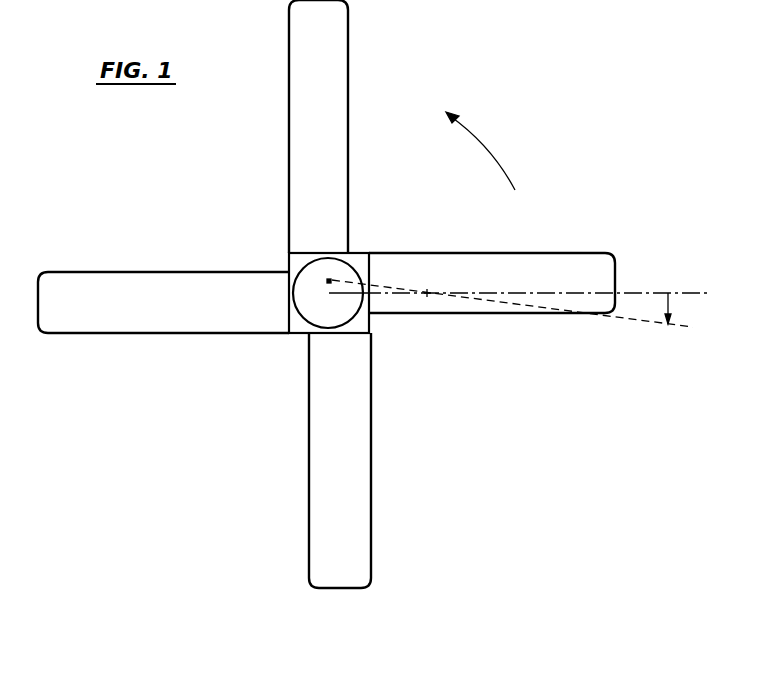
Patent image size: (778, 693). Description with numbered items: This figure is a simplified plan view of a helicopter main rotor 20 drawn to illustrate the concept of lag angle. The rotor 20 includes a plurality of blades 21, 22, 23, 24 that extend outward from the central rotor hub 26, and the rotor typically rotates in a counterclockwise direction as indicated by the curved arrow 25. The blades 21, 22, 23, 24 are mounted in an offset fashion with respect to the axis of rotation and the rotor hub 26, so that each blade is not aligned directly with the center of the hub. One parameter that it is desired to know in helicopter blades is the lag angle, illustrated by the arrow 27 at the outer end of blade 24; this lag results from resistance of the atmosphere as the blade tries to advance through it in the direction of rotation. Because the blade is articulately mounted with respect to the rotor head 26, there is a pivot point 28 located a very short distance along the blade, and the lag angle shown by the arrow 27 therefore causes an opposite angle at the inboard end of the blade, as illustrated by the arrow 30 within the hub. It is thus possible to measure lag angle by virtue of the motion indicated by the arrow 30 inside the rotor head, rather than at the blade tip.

The helicopter rotor 20 is at (350, 114).
The blade 21 is at (344, 143).
The blade 22 is at (137, 277).
The blade 23 is at (310, 468).
The blade 24 is at (504, 314).
The arrow 25 is at (481, 140).
The rotor hub 26 is at (351, 268).
The arrow 27 is at (667, 305).
The pivot point 28 is at (428, 296).
The arrow 30 is at (326, 283).